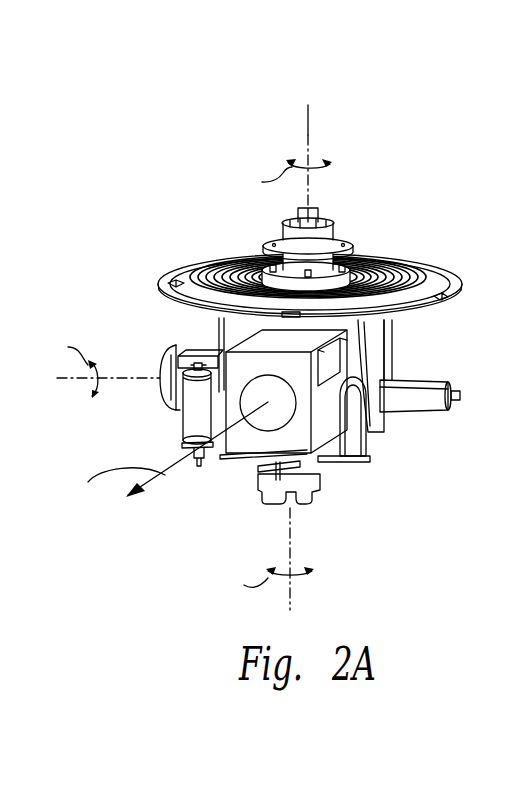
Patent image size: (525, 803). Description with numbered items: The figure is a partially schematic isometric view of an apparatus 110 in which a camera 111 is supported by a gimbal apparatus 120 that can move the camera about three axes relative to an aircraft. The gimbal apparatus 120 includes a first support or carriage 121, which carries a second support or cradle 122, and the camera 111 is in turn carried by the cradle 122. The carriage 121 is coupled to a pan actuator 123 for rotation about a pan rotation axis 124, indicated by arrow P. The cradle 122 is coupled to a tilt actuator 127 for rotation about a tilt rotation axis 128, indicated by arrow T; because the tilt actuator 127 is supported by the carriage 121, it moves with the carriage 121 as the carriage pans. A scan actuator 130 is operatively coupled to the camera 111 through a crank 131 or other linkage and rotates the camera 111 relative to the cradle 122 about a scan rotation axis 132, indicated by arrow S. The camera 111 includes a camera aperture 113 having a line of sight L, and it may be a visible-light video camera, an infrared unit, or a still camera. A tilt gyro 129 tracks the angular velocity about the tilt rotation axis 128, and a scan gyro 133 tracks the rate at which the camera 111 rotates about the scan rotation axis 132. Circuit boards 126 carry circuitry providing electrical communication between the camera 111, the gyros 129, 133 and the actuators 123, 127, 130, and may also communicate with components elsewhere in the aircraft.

The apparatus 110 is at (186, 140).
The camera 111 is at (236, 440).
The camera aperture 113 is at (283, 413).
The gimbal apparatus 120 is at (159, 244).
The carriage 121 is at (400, 332).
The cradle 122 is at (360, 455).
The pan actuator 123 is at (340, 222).
The pan rotation axis 124 is at (308, 130).
The circuit boards 126 is at (427, 282).
The tilt actuator 127 is at (422, 406).
The tilt rotation axis 128 is at (130, 378).
The tilt gyro 129 is at (172, 355).
The scan actuator 130 is at (187, 426).
The crank 131 is at (204, 462).
The scan rotation axis 132 is at (322, 582).
The scan gyro 133 is at (308, 505).